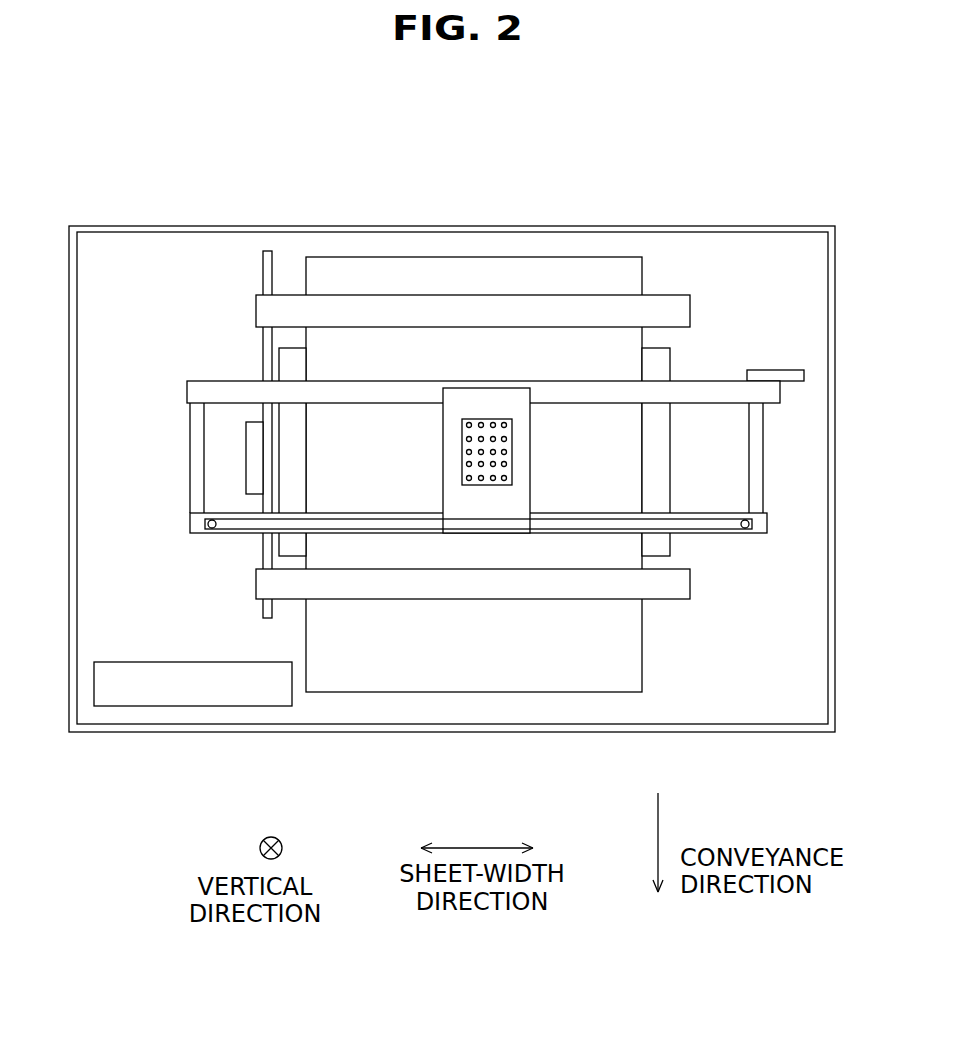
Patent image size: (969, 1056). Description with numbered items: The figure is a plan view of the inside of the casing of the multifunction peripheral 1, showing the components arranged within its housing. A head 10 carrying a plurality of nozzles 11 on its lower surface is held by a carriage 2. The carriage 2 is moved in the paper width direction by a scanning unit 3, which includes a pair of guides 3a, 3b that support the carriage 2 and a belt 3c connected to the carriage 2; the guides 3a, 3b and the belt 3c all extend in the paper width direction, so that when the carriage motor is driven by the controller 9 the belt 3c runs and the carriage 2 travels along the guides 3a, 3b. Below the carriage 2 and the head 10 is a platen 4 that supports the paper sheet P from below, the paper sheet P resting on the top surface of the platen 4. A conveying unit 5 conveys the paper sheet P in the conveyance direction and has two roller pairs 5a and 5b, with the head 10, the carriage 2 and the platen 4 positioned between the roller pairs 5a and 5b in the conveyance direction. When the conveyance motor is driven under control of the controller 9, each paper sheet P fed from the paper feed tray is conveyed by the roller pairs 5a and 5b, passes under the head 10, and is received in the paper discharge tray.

The multifunction peripheral 1 is at (758, 199).
The paper sheet P is at (482, 270).
The carriage 2 is at (487, 388).
The scanning unit 3 is at (778, 360).
The guide 3a is at (775, 394).
The guide 3b is at (770, 523).
The belt 3c is at (727, 535).
The platen 4 is at (663, 367).
The conveying unit 5 is at (232, 305).
The roller pair 5a is at (266, 313).
The roller pair 5b is at (262, 582).
The controller 9 is at (131, 663).
The head 10 is at (462, 450).
The nozzles 11 is at (512, 438).